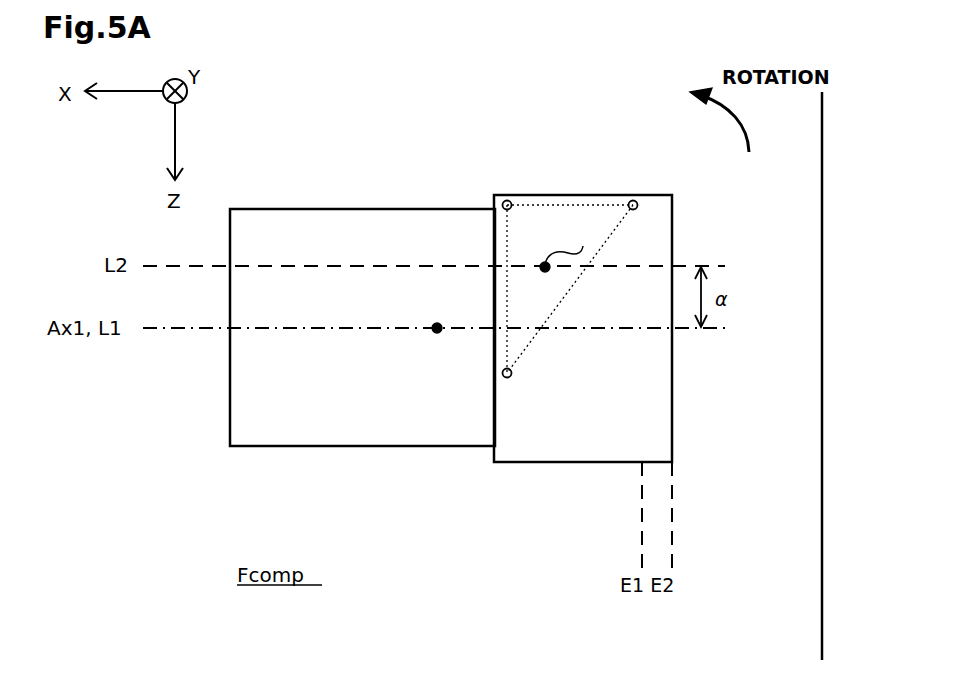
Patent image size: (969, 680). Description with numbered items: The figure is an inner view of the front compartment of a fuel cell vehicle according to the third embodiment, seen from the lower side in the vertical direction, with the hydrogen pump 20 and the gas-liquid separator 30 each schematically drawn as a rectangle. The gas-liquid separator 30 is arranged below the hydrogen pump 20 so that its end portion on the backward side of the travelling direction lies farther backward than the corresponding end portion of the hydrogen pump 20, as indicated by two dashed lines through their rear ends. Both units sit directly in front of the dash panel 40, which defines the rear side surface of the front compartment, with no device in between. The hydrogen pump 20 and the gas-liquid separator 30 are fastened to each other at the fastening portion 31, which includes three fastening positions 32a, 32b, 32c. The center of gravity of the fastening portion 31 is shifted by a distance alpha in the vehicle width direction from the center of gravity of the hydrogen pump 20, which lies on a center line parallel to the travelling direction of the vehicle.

The hydrogen pump 20 is at (348, 163).
The gas-liquid separator 30 is at (692, 396).
The fastening portion 31 is at (673, 133).
The fastening position 32a is at (507, 200).
The fastening position 32b is at (633, 200).
The fastening position 32c is at (510, 377).
The dash panel 40 is at (877, 490).